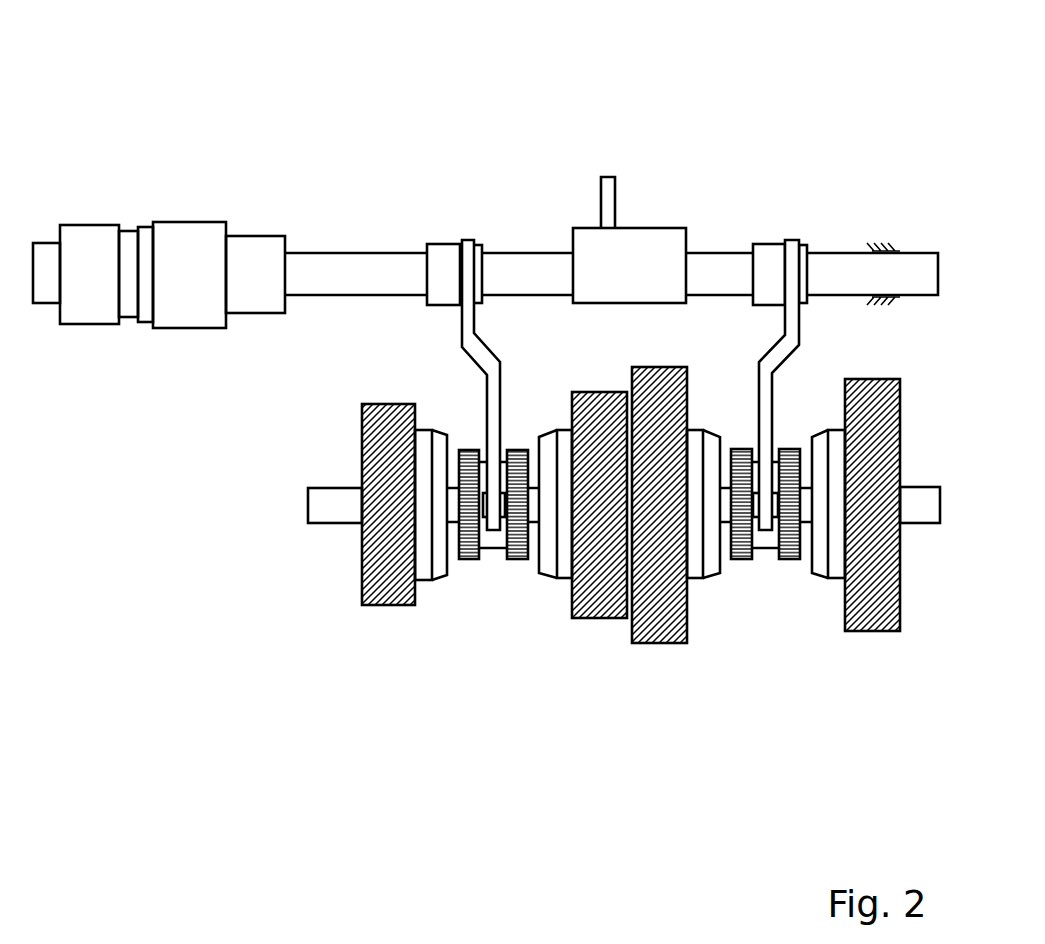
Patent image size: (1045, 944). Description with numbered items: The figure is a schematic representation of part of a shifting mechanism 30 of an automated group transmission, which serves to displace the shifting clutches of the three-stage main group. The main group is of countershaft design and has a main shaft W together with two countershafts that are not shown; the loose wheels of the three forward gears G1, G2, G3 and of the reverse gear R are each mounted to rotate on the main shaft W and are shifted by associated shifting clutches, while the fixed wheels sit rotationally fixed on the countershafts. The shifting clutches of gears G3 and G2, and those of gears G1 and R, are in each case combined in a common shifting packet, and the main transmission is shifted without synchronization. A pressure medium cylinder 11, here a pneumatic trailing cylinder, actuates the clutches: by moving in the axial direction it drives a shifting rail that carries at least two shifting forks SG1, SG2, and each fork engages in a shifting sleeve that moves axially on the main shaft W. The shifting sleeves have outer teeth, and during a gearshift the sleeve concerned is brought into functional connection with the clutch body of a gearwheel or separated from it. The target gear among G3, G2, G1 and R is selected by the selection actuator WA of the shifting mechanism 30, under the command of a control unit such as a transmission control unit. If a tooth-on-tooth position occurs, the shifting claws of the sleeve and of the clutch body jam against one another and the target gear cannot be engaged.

The pressure medium cylinder 11 is at (190, 243).
The shifting mechanism 30 is at (212, 472).
The shifting fork SG1 is at (478, 355).
The shifting fork SG2 is at (780, 352).
The selection actuator WA is at (607, 200).
The main shaft W is at (335, 505).
The third forward gear G3 is at (388, 625).
The second forward gear G2 is at (601, 637).
The first forward gear G1 is at (660, 660).
The reverse gear R is at (872, 648).